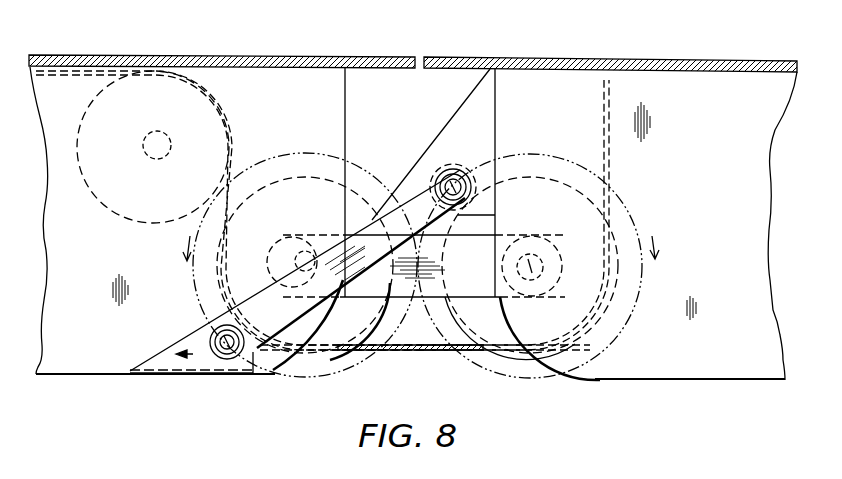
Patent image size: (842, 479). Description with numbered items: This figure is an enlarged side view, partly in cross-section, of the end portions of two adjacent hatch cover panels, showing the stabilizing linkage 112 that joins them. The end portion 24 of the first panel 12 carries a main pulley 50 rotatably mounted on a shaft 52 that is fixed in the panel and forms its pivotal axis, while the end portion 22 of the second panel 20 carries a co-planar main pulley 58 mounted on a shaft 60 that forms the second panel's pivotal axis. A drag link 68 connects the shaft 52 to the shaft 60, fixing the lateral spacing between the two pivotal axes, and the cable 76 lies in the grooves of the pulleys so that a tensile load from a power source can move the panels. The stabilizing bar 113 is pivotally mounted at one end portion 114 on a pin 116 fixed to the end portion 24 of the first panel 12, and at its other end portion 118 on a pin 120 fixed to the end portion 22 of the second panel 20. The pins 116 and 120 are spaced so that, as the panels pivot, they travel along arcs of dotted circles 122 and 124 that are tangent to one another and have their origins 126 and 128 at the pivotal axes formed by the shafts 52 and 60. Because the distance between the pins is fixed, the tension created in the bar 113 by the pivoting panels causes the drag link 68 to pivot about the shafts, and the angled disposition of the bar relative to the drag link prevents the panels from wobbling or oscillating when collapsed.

The first panel 12 is at (88, 55).
The second panel 20 is at (706, 59).
The end portion of the second panel 22 is at (713, 181).
The end portion of the first panel 24 is at (102, 264).
The main pulley 50 is at (358, 330).
The shaft 52 is at (280, 257).
The main pulley 58 is at (488, 333).
The shaft 60 is at (545, 262).
The drag link 68 is at (420, 298).
The cable 76 is at (440, 352).
The stabilizing linkage 112 is at (404, 148).
The stabilizing bar 113 is at (345, 218).
The end portion of the stabilizing bar 114 is at (221, 374).
The pin 116 is at (210, 340).
The end portion of the stabilizing bar 118 is at (460, 171).
The pin 120 is at (441, 168).
The circle 122 is at (318, 157).
The circle 124 is at (555, 162).
The origin 126 is at (290, 237).
The origin 128 is at (536, 238).